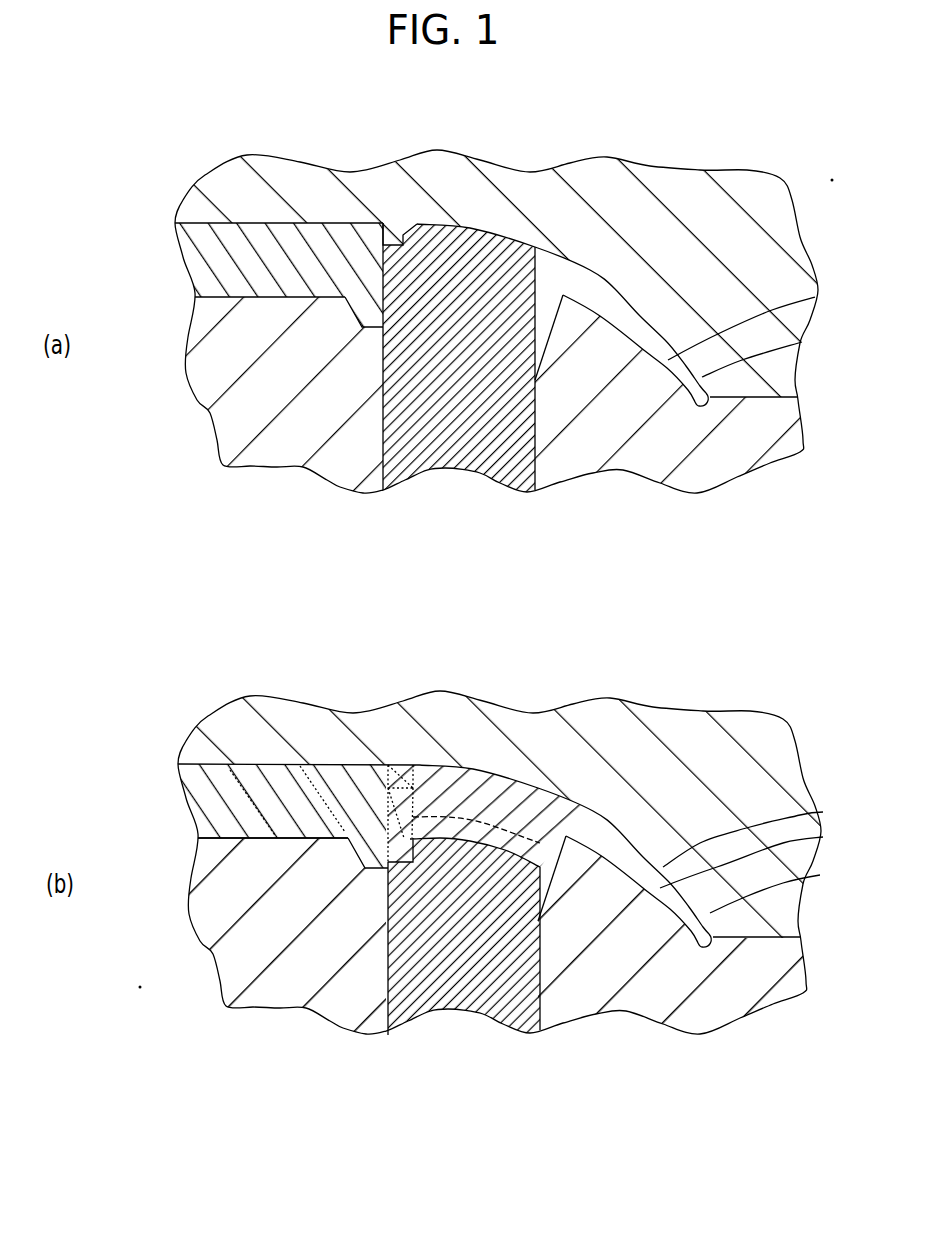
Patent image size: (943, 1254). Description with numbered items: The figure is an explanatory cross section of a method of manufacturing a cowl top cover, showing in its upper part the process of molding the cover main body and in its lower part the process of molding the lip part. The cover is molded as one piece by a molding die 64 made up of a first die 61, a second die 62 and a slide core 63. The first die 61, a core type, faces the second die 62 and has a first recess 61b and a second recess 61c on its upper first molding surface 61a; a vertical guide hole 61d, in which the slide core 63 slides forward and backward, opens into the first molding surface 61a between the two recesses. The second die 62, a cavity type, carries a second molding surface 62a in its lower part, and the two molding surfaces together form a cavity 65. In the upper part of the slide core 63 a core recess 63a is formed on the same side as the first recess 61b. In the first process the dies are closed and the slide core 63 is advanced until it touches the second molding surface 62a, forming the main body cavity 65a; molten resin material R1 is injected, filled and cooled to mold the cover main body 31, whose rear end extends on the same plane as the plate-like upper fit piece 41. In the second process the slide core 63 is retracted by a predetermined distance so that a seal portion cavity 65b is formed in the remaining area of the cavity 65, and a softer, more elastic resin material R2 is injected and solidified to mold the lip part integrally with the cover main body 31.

The resin material R1 is at (230, 227).
The resin material R2 is at (483, 772).
The cover main body 31 is at (247, 793).
The upper fit piece 41 is at (247, 793).
The first die 61 is at (767, 430).
The first molding surface 61a is at (817, 297).
The first recess 61b is at (357, 330).
The second recess 61c is at (563, 297).
The guide hole 61d is at (536, 462).
The second die 62 is at (709, 190).
The second molding surface 62a is at (615, 284).
The slide core 63 is at (505, 463).
The core recess 63a is at (390, 240).
The molding die 64 is at (817, 242).
The cavity 65 is at (802, 343).
The main body cavity 65a is at (255, 296).
The seal portion cavity 65b is at (822, 812).